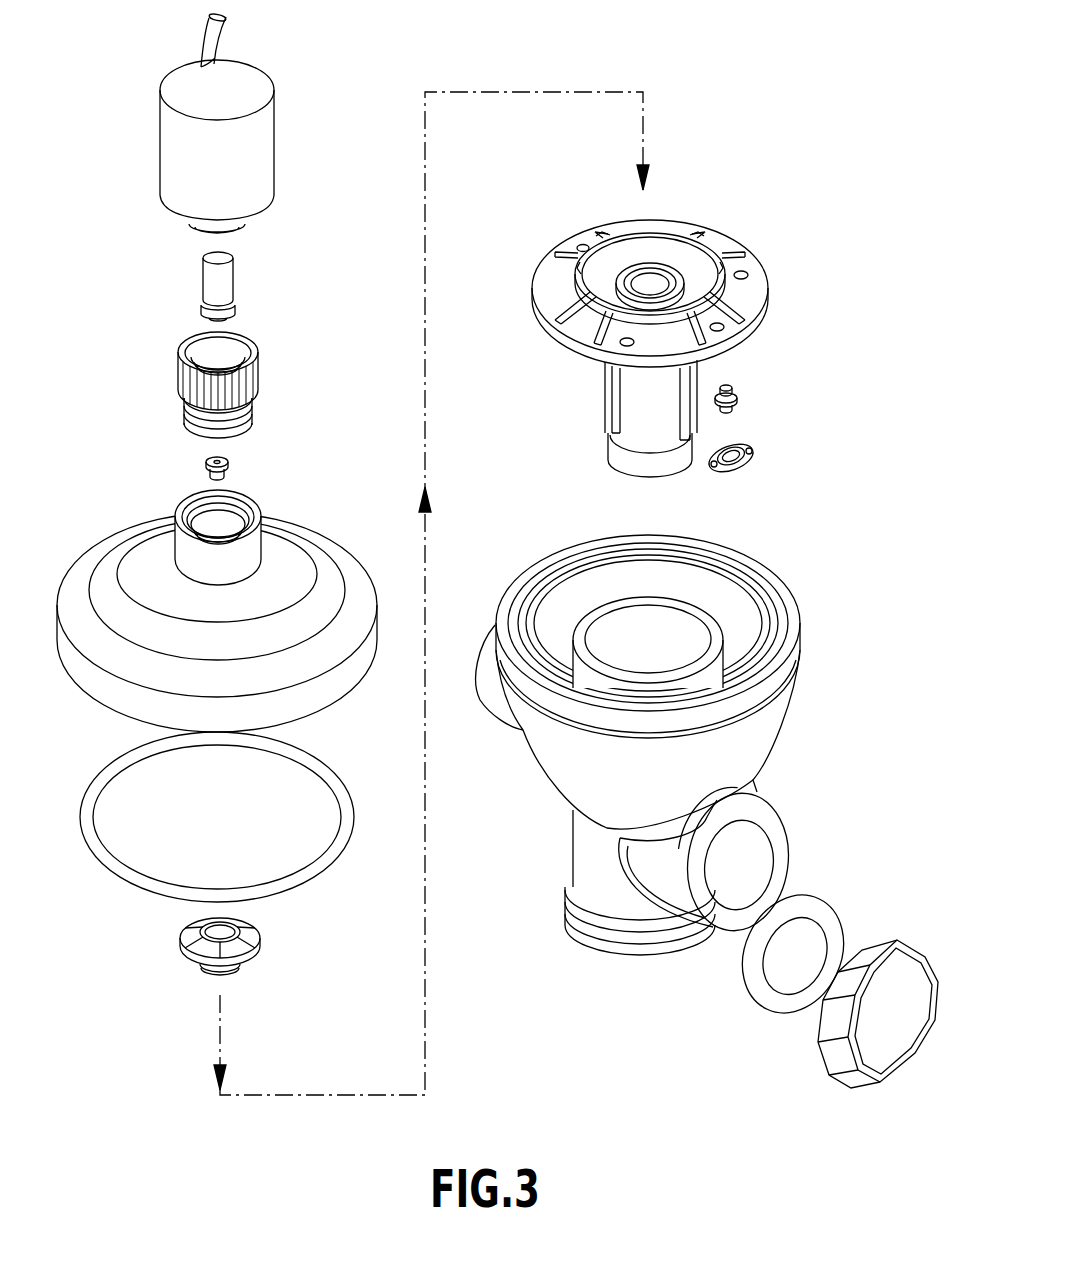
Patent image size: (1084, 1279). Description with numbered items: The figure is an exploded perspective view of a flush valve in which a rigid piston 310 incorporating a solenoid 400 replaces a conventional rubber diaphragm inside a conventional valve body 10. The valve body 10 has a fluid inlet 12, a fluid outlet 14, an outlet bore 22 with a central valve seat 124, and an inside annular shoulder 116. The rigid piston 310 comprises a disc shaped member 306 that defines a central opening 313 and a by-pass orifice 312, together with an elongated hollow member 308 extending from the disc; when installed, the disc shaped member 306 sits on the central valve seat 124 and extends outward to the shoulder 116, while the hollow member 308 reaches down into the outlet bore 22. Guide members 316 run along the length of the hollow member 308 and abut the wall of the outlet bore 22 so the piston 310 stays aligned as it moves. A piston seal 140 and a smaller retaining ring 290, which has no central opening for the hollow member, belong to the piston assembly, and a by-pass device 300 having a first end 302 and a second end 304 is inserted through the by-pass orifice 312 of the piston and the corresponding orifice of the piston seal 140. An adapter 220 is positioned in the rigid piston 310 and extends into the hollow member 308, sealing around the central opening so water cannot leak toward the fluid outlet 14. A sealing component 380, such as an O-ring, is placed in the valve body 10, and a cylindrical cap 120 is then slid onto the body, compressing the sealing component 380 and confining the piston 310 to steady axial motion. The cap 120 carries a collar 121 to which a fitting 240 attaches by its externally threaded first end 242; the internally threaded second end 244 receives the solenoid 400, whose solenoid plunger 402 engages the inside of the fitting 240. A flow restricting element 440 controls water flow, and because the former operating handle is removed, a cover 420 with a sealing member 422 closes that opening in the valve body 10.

The valve body 10 is at (666, 757).
The fluid inlet 12 is at (477, 690).
The fluid outlet 14 is at (630, 952).
The outlet bore 22 is at (605, 595).
The inside annular shoulder 116 is at (633, 595).
The cylindrical cap 120 is at (211, 605).
The collar 121 is at (170, 547).
The central valve seat 124 is at (713, 638).
The piston seal 140 is at (545, 337).
The adapter 220 is at (178, 937).
The fitting 240 is at (236, 382).
The first end 242 is at (197, 432).
The second end 244 is at (197, 350).
The retaining ring 290 is at (748, 463).
The by-pass device 300 is at (786, 399).
The first end 302 is at (732, 412).
The second end 304 is at (728, 388).
The disc shaped member 306 is at (575, 257).
The elongated hollow member 308 is at (685, 466).
The rigid piston 310 is at (693, 349).
The by-pass orifice 312 is at (717, 327).
The central opening 313 is at (650, 287).
The guide members 316 is at (605, 398).
The sealing component 380 is at (87, 845).
The solenoid 400 is at (255, 92).
The solenoid plunger 402 is at (237, 274).
The cover 420 is at (908, 952).
The sealing member 422 is at (834, 903).
The flow restricting element 440 is at (228, 475).